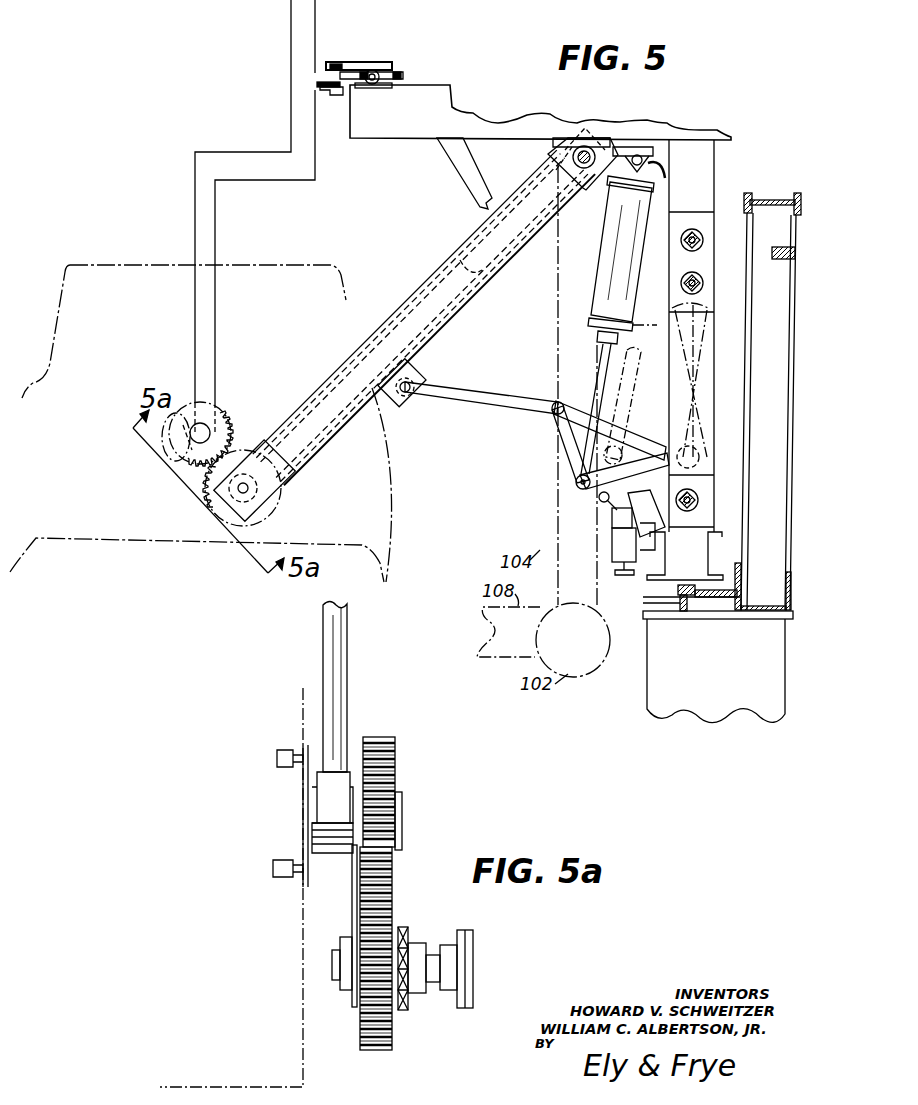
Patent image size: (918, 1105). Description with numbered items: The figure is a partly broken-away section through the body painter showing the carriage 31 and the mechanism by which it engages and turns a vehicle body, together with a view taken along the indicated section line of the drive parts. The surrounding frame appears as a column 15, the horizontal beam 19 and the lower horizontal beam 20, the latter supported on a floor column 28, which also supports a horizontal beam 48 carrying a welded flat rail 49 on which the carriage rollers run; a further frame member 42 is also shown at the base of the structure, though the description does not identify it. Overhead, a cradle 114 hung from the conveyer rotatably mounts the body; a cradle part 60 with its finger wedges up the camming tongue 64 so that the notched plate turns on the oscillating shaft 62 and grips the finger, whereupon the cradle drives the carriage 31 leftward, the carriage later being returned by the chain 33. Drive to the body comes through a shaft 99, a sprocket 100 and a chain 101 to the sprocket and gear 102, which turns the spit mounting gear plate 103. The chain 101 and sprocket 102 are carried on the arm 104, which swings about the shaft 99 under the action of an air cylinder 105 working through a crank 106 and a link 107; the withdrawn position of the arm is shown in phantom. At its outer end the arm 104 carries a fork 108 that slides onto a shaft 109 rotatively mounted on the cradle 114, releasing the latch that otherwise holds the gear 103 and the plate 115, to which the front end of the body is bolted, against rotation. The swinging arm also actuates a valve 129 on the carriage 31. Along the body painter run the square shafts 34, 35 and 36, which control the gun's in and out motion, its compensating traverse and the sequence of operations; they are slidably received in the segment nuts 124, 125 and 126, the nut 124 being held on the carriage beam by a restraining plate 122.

In FIG. 5, the column 15 is at (782, 348).
In FIG. 5, the horizontal beam 19 is at (782, 206).
In FIG. 5, the lower horizontal beam 20 is at (790, 590).
In FIG. 5, the floor column 28 is at (775, 642).
In FIG. 5, the carriage 31 is at (498, 104).
In FIG. 5, the chain 33 is at (786, 195).
In FIG. 5, the square shaft 34 is at (698, 496).
In FIG. 5, the square shaft 35 is at (703, 285).
In FIG. 5, the square shaft 36 is at (703, 241).
In FIG. 5, the column base 42 is at (710, 578).
In FIG. 5, the horizontal beam 48 is at (700, 598).
In FIG. 5, the flat rail 49 is at (678, 590).
In FIG. 5, the cradle part 60 is at (326, 95).
In FIG. 5, the shaft 62 is at (372, 88).
In FIG. 5, the camming tongue 64 is at (328, 63).
In FIG. 5, the shaft 99 is at (585, 145).
In FIG. 5, the sprocket 100 is at (551, 170).
In FIG. 5, the chain 101 is at (485, 283).
In FIG. 5a, the chain 101 is at (405, 927).
In FIG. 5, the sprocket and gear 102 is at (278, 496).
In FIG. 5a, the sprocket and gear 102 is at (362, 1053).
In FIG. 5, the spit mounting gear plate 103 is at (220, 412).
In FIG. 5a, the spit mounting gear plate 103 is at (395, 851).
In FIG. 5, the arm 104 is at (420, 279).
In FIG. 5a, the arm 104 is at (476, 936).
In FIG. 5, the air cylinder 105 is at (613, 240).
In FIG. 5, the crank 106 is at (652, 366).
In FIG. 5, the link 107 is at (463, 395).
In FIG. 5, the fork 108 is at (187, 428).
In FIG. 5a, the fork 108 is at (354, 892).
In FIG. 5, the shaft 109 is at (183, 457).
In FIG. 5a, the shaft 109 is at (402, 818).
In FIG. 5, the cradle 114 is at (205, 197).
In FIG. 5a, the cradle 114 is at (340, 630).
In FIG. 5a, the plate 115 is at (303, 797).
In FIG. 5, the restraining plate 122 is at (690, 518).
In FIG. 5, the segment nut 124 is at (696, 492).
In FIG. 5, the segment nut 125 is at (702, 279).
In FIG. 5, the segment nut 126 is at (690, 232).
In FIG. 5, the valve 129 is at (612, 545).